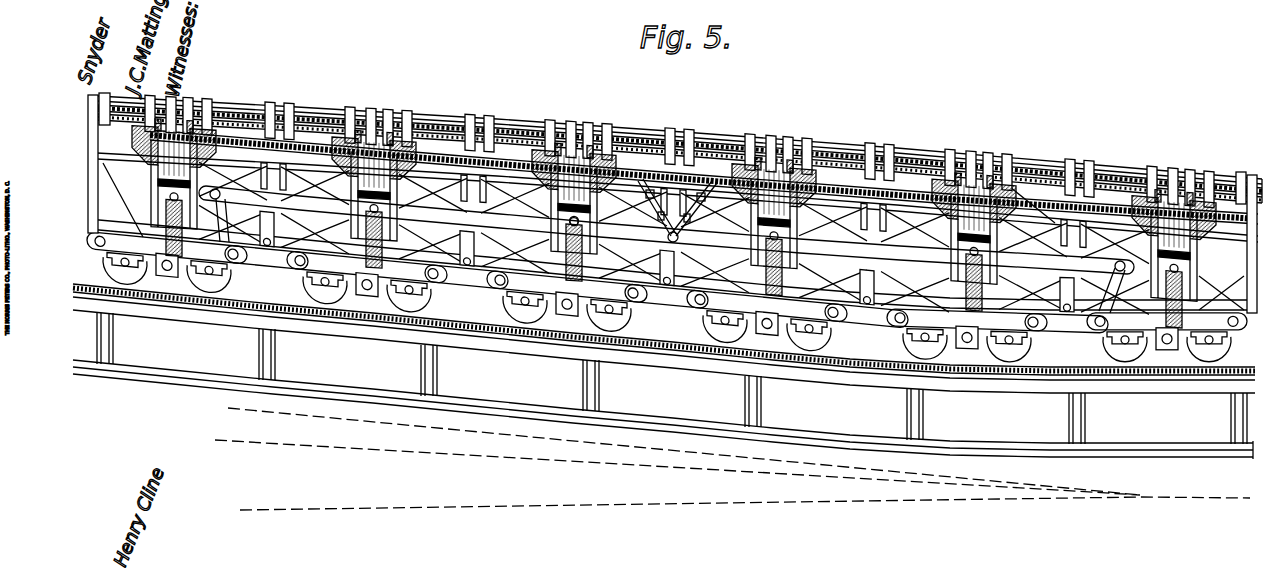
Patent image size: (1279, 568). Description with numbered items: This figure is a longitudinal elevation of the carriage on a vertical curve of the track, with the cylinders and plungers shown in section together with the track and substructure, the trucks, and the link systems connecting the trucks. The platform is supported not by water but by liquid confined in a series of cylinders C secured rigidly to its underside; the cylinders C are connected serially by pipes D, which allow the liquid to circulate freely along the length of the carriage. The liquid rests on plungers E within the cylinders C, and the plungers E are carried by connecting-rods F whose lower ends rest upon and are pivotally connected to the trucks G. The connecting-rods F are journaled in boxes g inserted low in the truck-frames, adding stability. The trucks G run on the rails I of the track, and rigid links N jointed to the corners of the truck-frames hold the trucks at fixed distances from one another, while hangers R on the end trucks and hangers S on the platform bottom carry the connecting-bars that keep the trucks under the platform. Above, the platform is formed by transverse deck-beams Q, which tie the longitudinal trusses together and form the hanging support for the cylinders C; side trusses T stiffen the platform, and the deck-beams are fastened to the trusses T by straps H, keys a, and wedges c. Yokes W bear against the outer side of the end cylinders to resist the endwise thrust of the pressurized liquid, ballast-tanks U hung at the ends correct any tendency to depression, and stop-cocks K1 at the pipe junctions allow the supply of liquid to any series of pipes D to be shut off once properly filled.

The stop-cock K1 is at (250, 128).
The straps H is at (384, 124).
The transverse deck-beams Q is at (490, 134).
The plungers E is at (603, 150).
The pipes D is at (703, 173).
The trusses T is at (907, 180).
The yokes W is at (103, 106).
The ballast-tanks U is at (666, 228).
The hangers R is at (230, 226).
The keys a is at (648, 194).
The wedges c is at (671, 216).
The cylinders C is at (553, 222).
The connecting-rods F is at (669, 238).
The hangers S is at (705, 232).
The trucks G is at (567, 316).
The rigid links N is at (470, 280).
The rails I is at (682, 358).
The boxes g is at (173, 303).